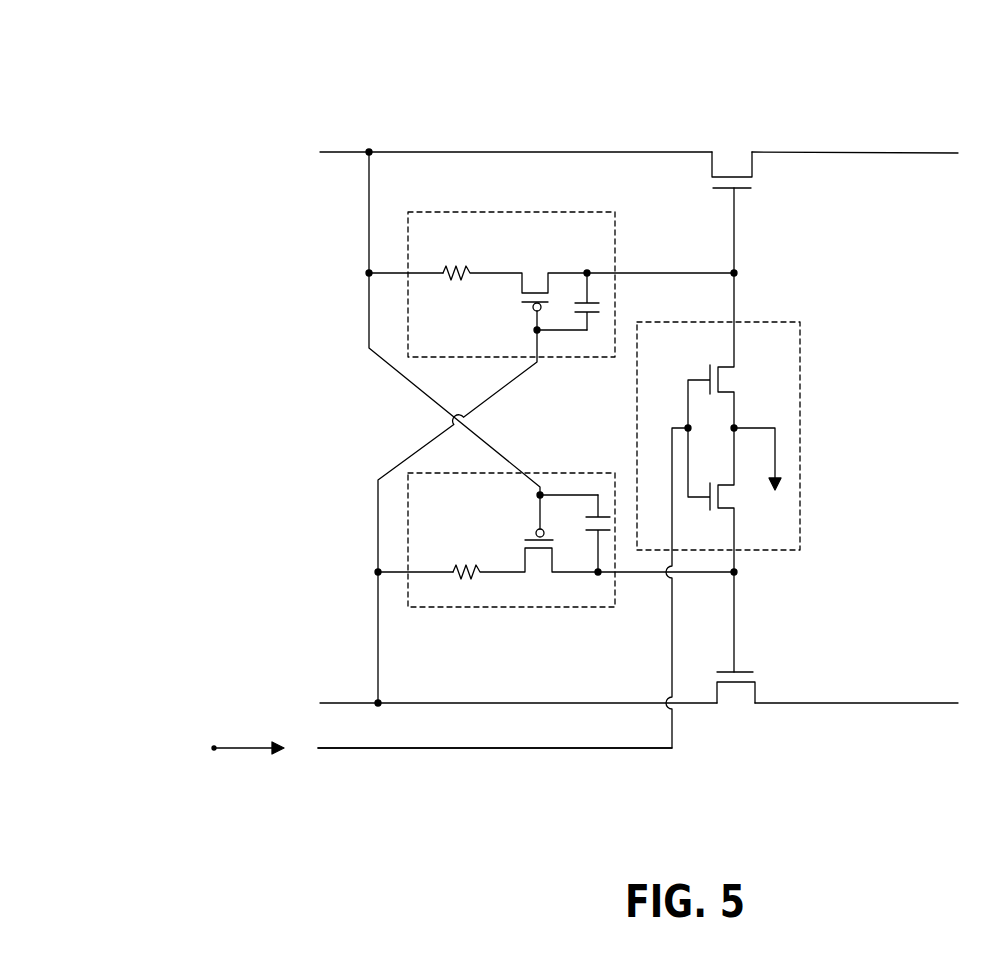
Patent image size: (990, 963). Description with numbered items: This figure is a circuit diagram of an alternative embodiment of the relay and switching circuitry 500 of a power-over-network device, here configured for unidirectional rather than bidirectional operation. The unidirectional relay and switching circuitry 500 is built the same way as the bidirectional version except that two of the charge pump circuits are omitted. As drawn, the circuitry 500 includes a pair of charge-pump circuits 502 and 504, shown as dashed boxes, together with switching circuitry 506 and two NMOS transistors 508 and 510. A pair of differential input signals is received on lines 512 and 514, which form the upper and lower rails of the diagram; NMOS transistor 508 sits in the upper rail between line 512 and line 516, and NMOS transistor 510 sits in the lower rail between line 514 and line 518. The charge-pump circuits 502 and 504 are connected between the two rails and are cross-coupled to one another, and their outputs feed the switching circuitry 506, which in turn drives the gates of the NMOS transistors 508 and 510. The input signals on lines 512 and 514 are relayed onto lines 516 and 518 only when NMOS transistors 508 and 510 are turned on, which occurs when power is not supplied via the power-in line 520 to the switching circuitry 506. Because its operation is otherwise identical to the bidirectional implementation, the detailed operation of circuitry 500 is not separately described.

The relay and switching circuitry 500 is at (662, 82).
The charge-pump circuit 502 is at (447, 212).
The charge-pump circuit 504 is at (483, 607).
The switching circuitry 506 is at (800, 430).
The NMOS transistor 508 is at (753, 163).
The NMOS transistor 510 is at (757, 690).
The line 512 is at (437, 152).
The line 514 is at (346, 702).
The line 516 is at (922, 153).
The line 518 is at (915, 703).
The line 520 is at (363, 748).